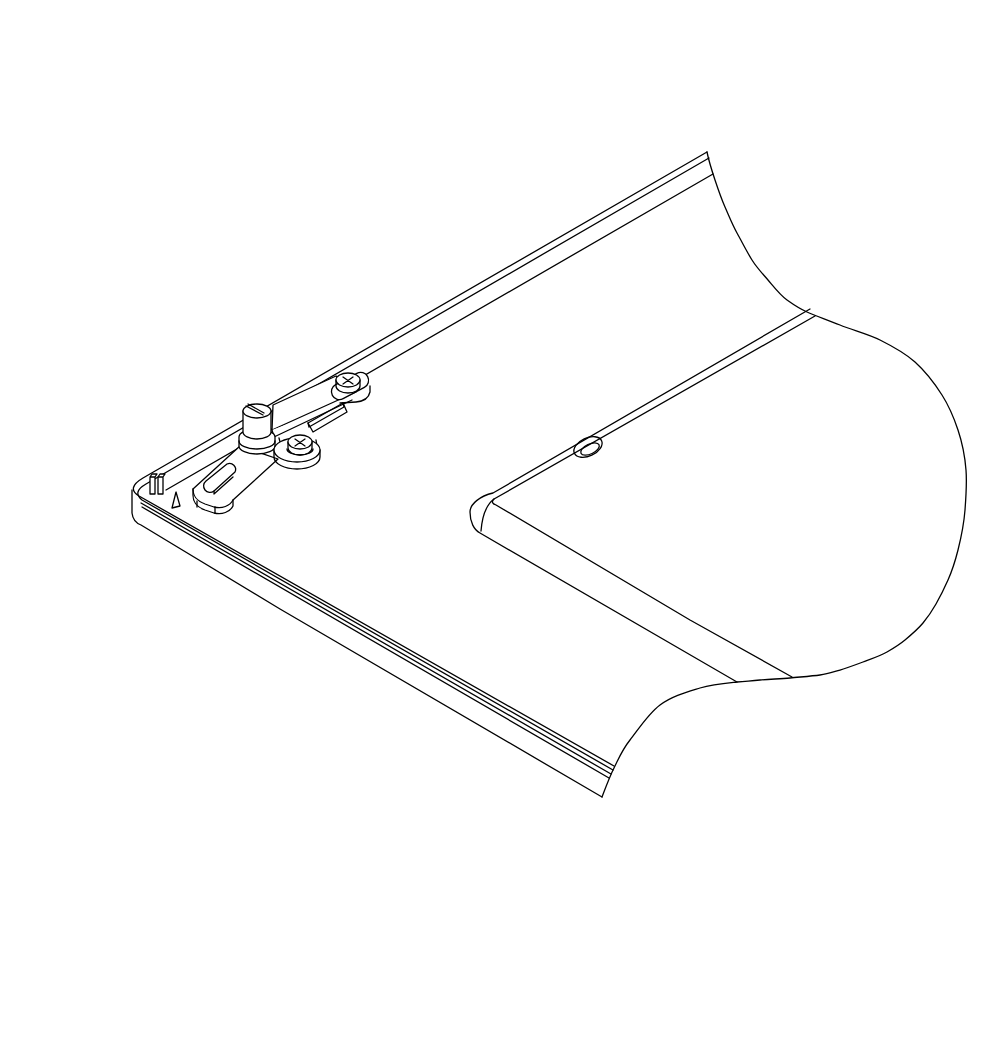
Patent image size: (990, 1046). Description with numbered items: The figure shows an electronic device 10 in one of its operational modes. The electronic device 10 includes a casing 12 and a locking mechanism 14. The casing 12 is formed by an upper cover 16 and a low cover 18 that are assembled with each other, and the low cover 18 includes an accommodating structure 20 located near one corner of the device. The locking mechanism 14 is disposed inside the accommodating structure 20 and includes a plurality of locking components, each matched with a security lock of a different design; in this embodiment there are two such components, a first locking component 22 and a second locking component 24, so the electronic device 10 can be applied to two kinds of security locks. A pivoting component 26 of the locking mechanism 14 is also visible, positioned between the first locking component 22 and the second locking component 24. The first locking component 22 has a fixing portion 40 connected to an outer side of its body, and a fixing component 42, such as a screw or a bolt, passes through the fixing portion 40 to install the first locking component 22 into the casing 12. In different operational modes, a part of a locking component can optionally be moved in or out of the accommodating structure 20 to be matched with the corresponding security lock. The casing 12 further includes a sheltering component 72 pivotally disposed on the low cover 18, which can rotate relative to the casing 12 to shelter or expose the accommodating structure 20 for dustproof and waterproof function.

The electronic device 10 is at (875, 175).
The casing 12 is at (448, 748).
The locking mechanism 14 is at (452, 267).
The upper cover 16 is at (578, 582).
The low cover 18 is at (377, 650).
The accommodating structure 20 is at (173, 497).
The first locking component 22 is at (288, 402).
The second locking component 24 is at (227, 463).
The pivoting component 26 is at (250, 400).
The fixing portion 40 is at (397, 387).
The fixing component 42 is at (346, 376).
The sheltering component 72 is at (183, 469).